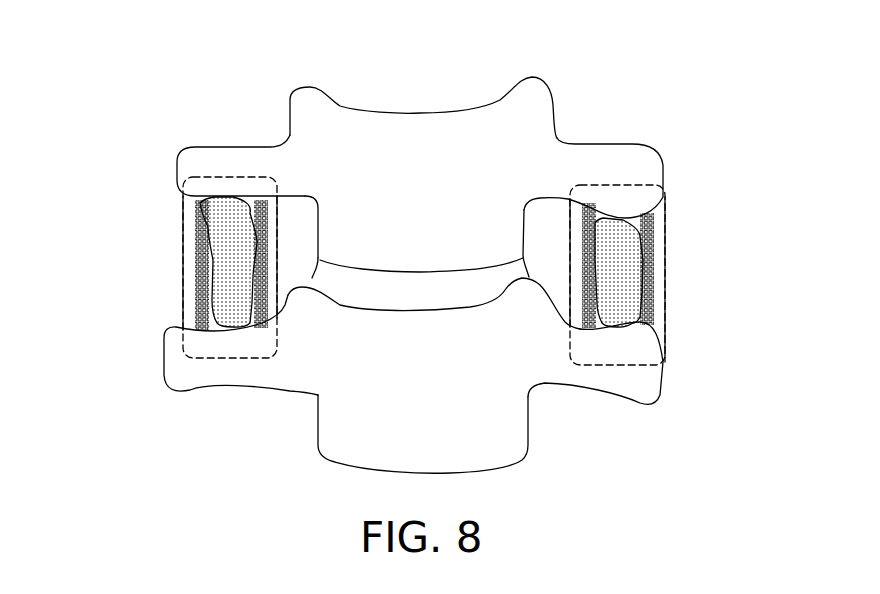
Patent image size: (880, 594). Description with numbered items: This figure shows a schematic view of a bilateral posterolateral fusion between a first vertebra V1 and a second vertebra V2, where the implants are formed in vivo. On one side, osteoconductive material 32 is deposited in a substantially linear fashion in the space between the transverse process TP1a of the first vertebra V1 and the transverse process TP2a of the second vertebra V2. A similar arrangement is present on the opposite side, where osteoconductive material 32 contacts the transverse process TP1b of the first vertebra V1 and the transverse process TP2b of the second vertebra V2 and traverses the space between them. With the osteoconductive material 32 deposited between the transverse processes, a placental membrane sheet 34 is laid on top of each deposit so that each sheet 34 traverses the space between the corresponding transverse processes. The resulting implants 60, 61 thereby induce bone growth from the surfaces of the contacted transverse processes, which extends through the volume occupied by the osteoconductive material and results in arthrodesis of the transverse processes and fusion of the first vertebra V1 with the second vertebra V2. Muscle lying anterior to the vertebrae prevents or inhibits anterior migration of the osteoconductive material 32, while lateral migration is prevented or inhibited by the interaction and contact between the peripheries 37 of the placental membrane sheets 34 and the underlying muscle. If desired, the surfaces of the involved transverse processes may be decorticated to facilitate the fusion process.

The first vertebra V1 is at (423, 108).
The second vertebra V2 is at (490, 445).
The transverse process TP1a is at (197, 158).
The transverse process TP1b is at (643, 158).
The transverse process TP2a is at (188, 370).
The transverse process TP2b is at (657, 383).
The osteoconductive implant 60 is at (115, 272).
The osteoconductive implant 61 is at (712, 272).
The placental membrane sheet 34 is at (183, 225).
The periphery 37 is at (190, 316).
The osteoconductive material 32 is at (225, 303).